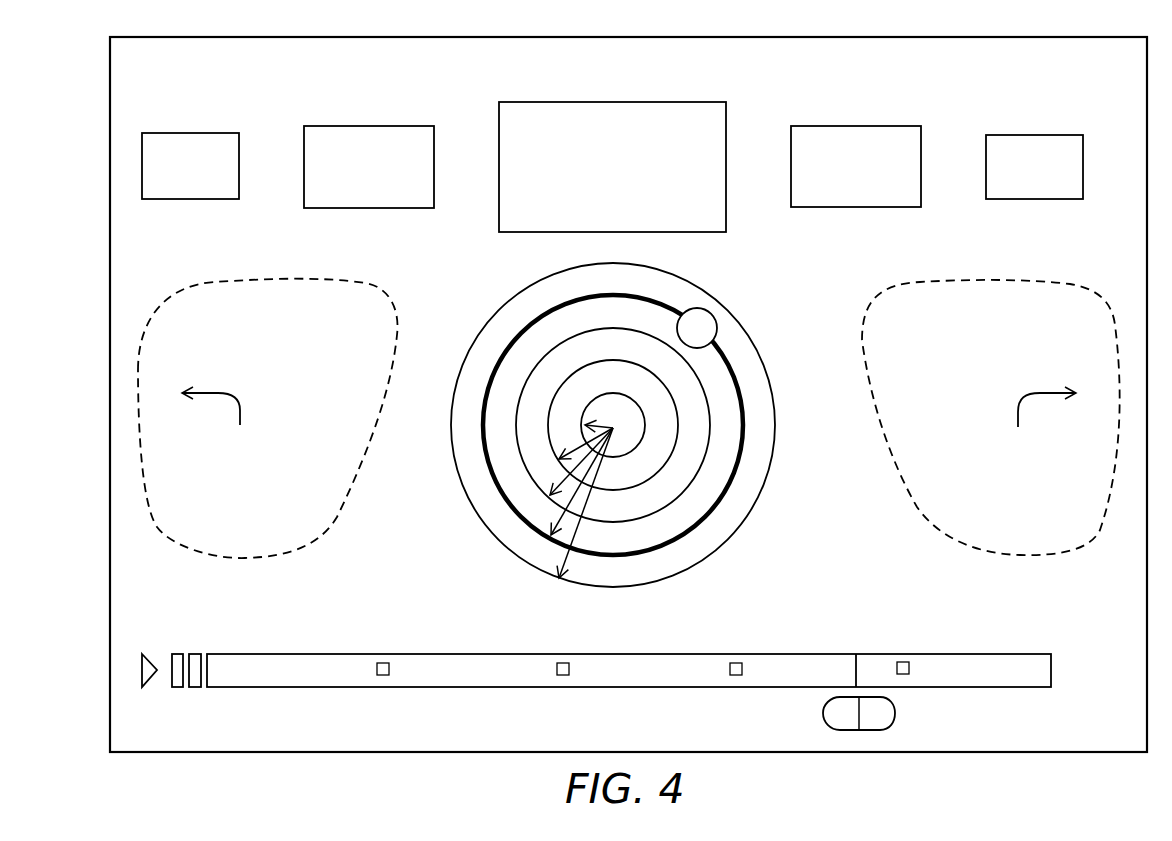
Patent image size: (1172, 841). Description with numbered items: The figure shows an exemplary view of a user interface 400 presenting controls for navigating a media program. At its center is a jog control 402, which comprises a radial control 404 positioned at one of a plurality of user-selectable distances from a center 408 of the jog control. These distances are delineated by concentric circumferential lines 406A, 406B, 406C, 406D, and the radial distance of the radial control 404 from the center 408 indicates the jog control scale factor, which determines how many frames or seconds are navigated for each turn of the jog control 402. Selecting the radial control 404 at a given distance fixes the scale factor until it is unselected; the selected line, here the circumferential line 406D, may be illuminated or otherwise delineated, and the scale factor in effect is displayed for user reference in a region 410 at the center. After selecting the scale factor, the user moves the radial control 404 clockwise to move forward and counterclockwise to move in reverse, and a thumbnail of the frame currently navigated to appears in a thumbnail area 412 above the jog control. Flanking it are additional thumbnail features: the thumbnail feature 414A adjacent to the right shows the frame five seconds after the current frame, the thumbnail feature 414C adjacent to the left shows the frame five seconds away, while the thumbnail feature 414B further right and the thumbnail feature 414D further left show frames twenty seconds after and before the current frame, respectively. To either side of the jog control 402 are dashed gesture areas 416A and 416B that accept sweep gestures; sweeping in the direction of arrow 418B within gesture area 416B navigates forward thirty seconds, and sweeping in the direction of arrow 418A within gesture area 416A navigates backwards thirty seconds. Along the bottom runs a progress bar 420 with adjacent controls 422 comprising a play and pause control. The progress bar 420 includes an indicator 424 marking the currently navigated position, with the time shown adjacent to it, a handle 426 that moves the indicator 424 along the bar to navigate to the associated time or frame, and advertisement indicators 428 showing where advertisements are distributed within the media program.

The user interface 400 is at (920, 37).
The jog control 402 is at (670, 425).
The radial control 404 is at (710, 303).
The circumferential line 406A is at (697, 525).
The circumferential line 406B is at (669, 504).
The circumferential line 406C is at (645, 481).
The circumferential line 406D is at (613, 458).
The center 408 is at (617, 431).
The region 410 is at (597, 400).
The thumbnail area 412 is at (727, 148).
The thumbnail feature 414A is at (922, 152).
The thumbnail feature 414B is at (1070, 199).
The thumbnail feature 414C is at (335, 208).
The thumbnail feature 414D is at (175, 199).
The gesture area 416A is at (330, 520).
The gesture area 416B is at (1050, 282).
The arrow 418A is at (210, 438).
The arrow 418B is at (1038, 428).
The progress bar 420 is at (987, 652).
The controls 422 is at (208, 637).
The indicator 424 is at (857, 670).
The handle 426 is at (895, 713).
The advertisement indicator 428 is at (385, 664).